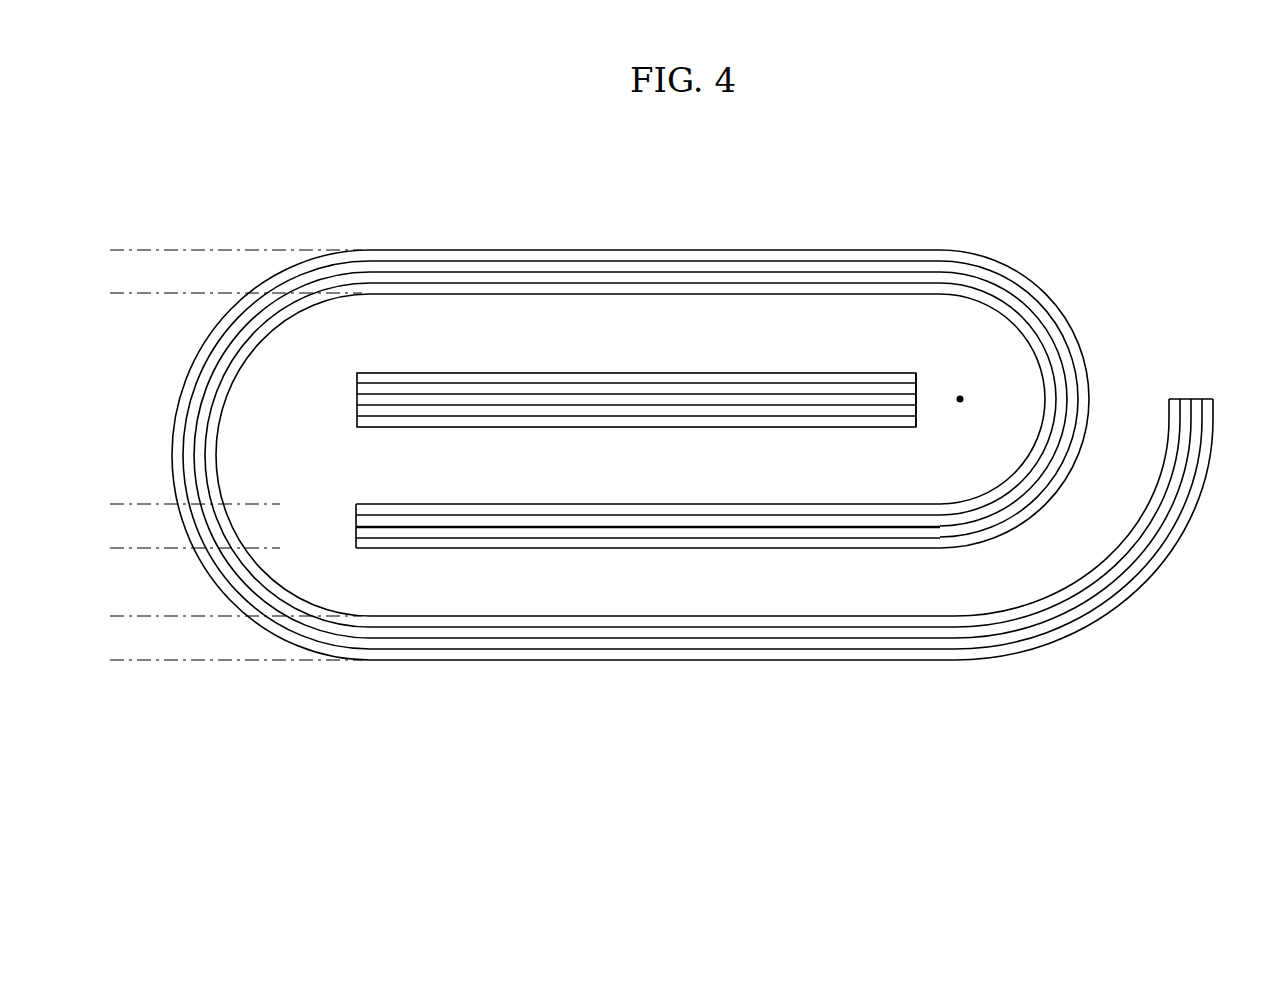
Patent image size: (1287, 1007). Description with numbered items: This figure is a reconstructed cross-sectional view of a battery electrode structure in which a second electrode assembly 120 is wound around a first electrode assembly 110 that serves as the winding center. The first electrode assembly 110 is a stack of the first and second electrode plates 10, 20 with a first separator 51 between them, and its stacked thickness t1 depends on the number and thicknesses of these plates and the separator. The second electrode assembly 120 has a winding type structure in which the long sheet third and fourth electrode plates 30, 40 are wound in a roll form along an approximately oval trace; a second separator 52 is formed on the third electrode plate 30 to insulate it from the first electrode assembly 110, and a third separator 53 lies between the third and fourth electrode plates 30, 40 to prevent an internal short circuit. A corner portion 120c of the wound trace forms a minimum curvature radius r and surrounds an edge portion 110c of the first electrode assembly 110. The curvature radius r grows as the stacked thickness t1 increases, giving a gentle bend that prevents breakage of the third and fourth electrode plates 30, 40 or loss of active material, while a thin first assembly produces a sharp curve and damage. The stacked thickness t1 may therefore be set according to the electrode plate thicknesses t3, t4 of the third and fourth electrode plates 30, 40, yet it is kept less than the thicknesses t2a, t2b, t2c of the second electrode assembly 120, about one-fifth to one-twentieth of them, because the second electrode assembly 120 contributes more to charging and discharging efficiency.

The first electrode assembly 110 is at (470, 350).
The edge portion of the first electrode assembly 110c is at (934, 350).
The second electrode assembly 120 is at (312, 510).
The corner portion of the second electrode assembly 120c is at (1044, 259).
The first electrode plate 10 is at (366, 399).
The second electrode plate 20 is at (366, 378).
The first separator 51 is at (366, 388).
The third electrode plate 30 is at (432, 522).
The fourth electrode plate 40 is at (418, 546).
The second separator 52 is at (399, 510).
The third separator 53 is at (467, 532).
The curvature radius r is at (1012, 347).
The stacked thickness t1 is at (856, 427).
The thickness of the second electrode assembly t2a is at (157, 250).
The thickness of the second electrode assembly t2b is at (157, 504).
The thickness of the second electrode assembly t2c is at (157, 616).
The thickness of the third electrode plate t3 is at (739, 528).
The thickness of the fourth electrode plate t4 is at (799, 495).